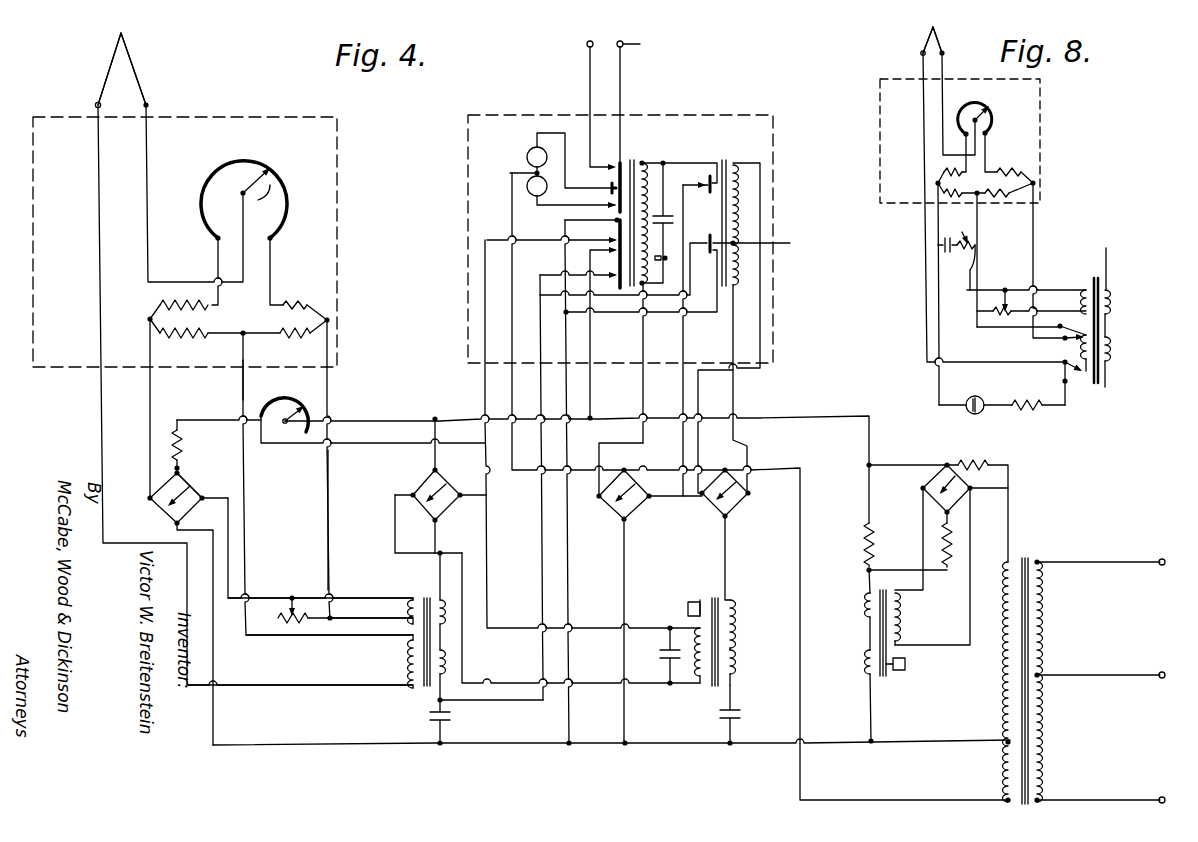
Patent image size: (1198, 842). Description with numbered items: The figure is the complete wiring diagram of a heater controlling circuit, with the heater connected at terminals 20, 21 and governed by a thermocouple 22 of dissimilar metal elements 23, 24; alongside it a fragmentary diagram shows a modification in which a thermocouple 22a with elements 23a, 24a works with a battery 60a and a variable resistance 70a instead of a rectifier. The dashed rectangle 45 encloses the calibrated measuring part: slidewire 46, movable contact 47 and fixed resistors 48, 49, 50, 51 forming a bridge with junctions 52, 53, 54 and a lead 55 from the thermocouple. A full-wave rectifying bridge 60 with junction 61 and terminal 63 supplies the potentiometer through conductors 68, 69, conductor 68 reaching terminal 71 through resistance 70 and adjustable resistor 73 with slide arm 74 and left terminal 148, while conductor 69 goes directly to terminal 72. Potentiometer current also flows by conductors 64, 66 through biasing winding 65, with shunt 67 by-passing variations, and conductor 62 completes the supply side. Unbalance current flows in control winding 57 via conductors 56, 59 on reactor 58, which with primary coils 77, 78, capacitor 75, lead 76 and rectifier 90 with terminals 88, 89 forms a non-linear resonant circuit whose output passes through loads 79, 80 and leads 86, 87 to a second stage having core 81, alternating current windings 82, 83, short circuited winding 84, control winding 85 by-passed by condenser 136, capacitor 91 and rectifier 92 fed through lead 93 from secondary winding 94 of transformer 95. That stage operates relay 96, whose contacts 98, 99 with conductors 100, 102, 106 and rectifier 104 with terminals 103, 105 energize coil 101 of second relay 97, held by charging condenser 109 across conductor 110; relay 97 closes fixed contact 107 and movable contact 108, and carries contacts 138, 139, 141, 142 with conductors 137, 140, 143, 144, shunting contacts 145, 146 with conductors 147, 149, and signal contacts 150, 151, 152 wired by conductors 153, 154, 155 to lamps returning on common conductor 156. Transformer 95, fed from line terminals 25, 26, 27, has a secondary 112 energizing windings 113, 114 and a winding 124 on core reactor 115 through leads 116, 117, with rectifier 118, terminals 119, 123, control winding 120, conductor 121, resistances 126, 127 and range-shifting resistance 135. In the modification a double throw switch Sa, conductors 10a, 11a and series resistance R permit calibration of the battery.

In FIG. 4, the heater terminal 20 is at (581, 103).
In FIG. 4, the heater terminal 21 is at (641, 162).
In FIG. 4, the thermocouple 22 is at (130, 75).
In FIG. 4, the dissimilar metal element 23 is at (103, 70).
In FIG. 4, the dissimilar metal element 24 is at (130, 50).
In FIG. 4, the line terminal 25 is at (1158, 800).
In FIG. 4, the line terminal 26 is at (1124, 676).
In FIG. 4, the line terminal 27 is at (1112, 565).
In FIG. 4, the rectangle 45 is at (337, 217).
In FIG. 4, the slidewire 46 is at (268, 157).
In FIG. 8, the slidewire 46 is at (978, 112).
In FIG. 4, the movable contact 47 is at (247, 183).
In FIG. 8, the movable contact 47 is at (968, 110).
In FIG. 4, the fixed resistor 48 is at (186, 278).
In FIG. 8, the fixed resistor 48 is at (942, 170).
In FIG. 4, the fixed resistor 49 is at (192, 338).
In FIG. 8, the fixed resistor 49 is at (936, 205).
In FIG. 4, the fixed resistor 50 is at (298, 279).
In FIG. 8, the fixed resistor 50 is at (1000, 170).
In FIG. 4, the fixed resistor 51 is at (303, 338).
In FIG. 8, the fixed resistor 51 is at (1012, 197).
In FIG. 4, the point 52 is at (323, 473).
In FIG. 8, the point 52 is at (985, 258).
In FIG. 4, the junction 53 is at (148, 318).
In FIG. 4, the point 54 is at (330, 320).
In FIG. 8, the point 54 is at (1035, 184).
In FIG. 4, the conductor 55 is at (148, 195).
In FIG. 4, the conductor 56 is at (99, 296).
In FIG. 8, the conductor 56 is at (995, 366).
In FIG. 4, the control winding 57 is at (408, 666).
In FIG. 8, the control winding 57 is at (1092, 348).
In FIG. 4, the reactor 58 is at (424, 700).
In FIG. 8, the reactor 58 is at (1100, 388).
In FIG. 4, the conductor 59 is at (296, 628).
In FIG. 8, the conductor 59 is at (984, 330).
In FIG. 4, the full-wave rectifying bridge 60 is at (194, 485).
In FIG. 4, the rectifier 61 is at (148, 495).
In FIG. 4, the conductor 62 is at (148, 425).
In FIG. 8, the conductor 62 is at (936, 235).
In FIG. 4, the rectifier terminal 63 is at (205, 497).
In FIG. 4, the conductor 64 is at (232, 542).
In FIG. 8, the conductor 64 is at (967, 290).
In FIG. 4, the biasing winding 65 is at (410, 598).
In FIG. 8, the biasing winding 65 is at (1082, 300).
In FIG. 4, the conductor 66 is at (332, 502).
In FIG. 8, the conductor 66 is at (1035, 222).
In FIG. 4, the shunt 67 is at (304, 600).
In FIG. 8, the shunt 67 is at (991, 315).
In FIG. 4, the conductor 68 is at (217, 418).
In FIG. 4, the conductor 69 is at (836, 740).
In FIG. 4, the resistance 70 is at (181, 440).
In FIG. 4, the terminal 71 is at (180, 470).
In FIG. 4, the terminal 72 is at (176, 523).
In FIG. 4, the adjustable resistor 73 is at (373, 410).
In FIG. 4, the slide arm 74 is at (320, 410).
In FIG. 4, the capacitor 75 is at (452, 716).
In FIG. 4, the lead 76 is at (455, 683).
In FIG. 4, the primary coil 77 is at (446, 656).
In FIG. 8, the primary coil 77 is at (1110, 362).
In FIG. 4, the primary coil 78 is at (446, 612).
In FIG. 8, the primary coil 78 is at (1110, 302).
In FIG. 4, the load 79 is at (444, 562).
In FIG. 4, the load 80 is at (446, 748).
In FIG. 4, the core 81 is at (722, 598).
In FIG. 4, the alternating current winding 82 is at (735, 614).
In FIG. 4, the alternating current winding 83 is at (735, 662).
In FIG. 4, the short circuited winding 84 is at (694, 600).
In FIG. 4, the direct current control winding 85 is at (698, 690).
In FIG. 4, the conductor 86 is at (592, 435).
In FIG. 4, the conductor 87 is at (573, 690).
In FIG. 4, the rectifier terminal 88 is at (463, 492).
In FIG. 4, the rectifier terminal 89 is at (416, 492).
In FIG. 4, the rectifier 90 is at (437, 486).
In FIG. 4, the capacitor 91 is at (740, 712).
In FIG. 4, the rectifier 92 is at (745, 482).
In FIG. 4, the lead 93 is at (922, 800).
In FIG. 4, the secondary winding 94 is at (1005, 775).
In FIG. 4, the transformer 95 is at (1012, 556).
In FIG. 4, the relay 96 is at (736, 165).
In FIG. 4, the second relay 97 is at (645, 160).
In FIG. 4, the contact 98 is at (723, 158).
In FIG. 4, the movable contact 99 is at (699, 192).
In FIG. 4, the conductor 100 is at (716, 160).
In FIG. 4, the coil 101 is at (679, 165).
In FIG. 4, the conductor 102 is at (643, 342).
In FIG. 4, the negative terminal 103 is at (599, 508).
In FIG. 4, the rectifier 104 is at (628, 475).
In FIG. 4, the positive terminal 105 is at (646, 508).
In FIG. 4, the conductor 106 is at (684, 345).
In FIG. 4, the fixed contact 107 is at (622, 160).
In FIG. 4, the movable contact 108 is at (608, 162).
In FIG. 4, the charging condenser 109 is at (657, 223).
In FIG. 4, the conductor 110 is at (680, 192).
In FIG. 4, the secondary 112 is at (1002, 660).
In FIG. 4, the alternating current winding 113 is at (866, 612).
In FIG. 4, the alternating current winding 114 is at (866, 666).
In FIG. 4, the core reactor 115 is at (886, 678).
In FIG. 4, the lead 116 is at (1010, 520).
In FIG. 4, the lead 117 is at (955, 740).
In FIG. 4, the rectifier 118 is at (945, 462).
In FIG. 4, the positive terminal 119 is at (1008, 490).
In FIG. 4, the control winding 120 is at (900, 630).
In FIG. 4, the conductor 121 is at (920, 542).
In FIG. 4, the negative terminal 123 is at (921, 488).
In FIG. 4, the transformer winding 124 is at (906, 664).
In FIG. 4, the resistance 126 is at (864, 542).
In FIG. 4, the resistance 127 is at (950, 568).
In FIG. 4, the resistance 135 is at (980, 462).
In FIG. 4, the condenser 136 is at (667, 640).
In FIG. 4, the conductor 137 is at (505, 706).
In FIG. 4, the contact 138 is at (578, 269).
In FIG. 4, the contact 139 is at (623, 276).
In FIG. 4, the conductor 140 is at (640, 282).
In FIG. 4, the contact 141 is at (704, 240).
In FIG. 4, the contact 142 is at (799, 238).
In FIG. 4, the conductor 143 is at (700, 318).
In FIG. 4, the conductor 144 is at (567, 384).
In FIG. 4, the contact 145 is at (592, 332).
In FIG. 4, the contact 146 is at (552, 234).
In FIG. 4, the conductor 147 is at (468, 318).
In FIG. 4, the left terminal 148 is at (264, 412).
In FIG. 4, the conductor 149 is at (591, 340).
In FIG. 4, the contact 150 is at (571, 187).
In FIG. 4, the contact 151 is at (592, 215).
In FIG. 4, the contact 152 is at (608, 186).
In FIG. 4, the conductor 153 is at (542, 278).
In FIG. 4, the conductor 154 is at (563, 222).
In FIG. 4, the conductor 155 is at (562, 135).
In FIG. 4, the common conductor 156 is at (507, 172).
In FIG. 8, the thermocouple 22a is at (928, 50).
In FIG. 8, the dissimilar metal element 23a is at (920, 40).
In FIG. 8, the dissimilar metal element 24a is at (940, 42).
In FIG. 8, the battery 60a is at (948, 240).
In FIG. 8, the variable resistance 70a is at (976, 244).
In FIG. 8, the conductor 10a is at (1068, 400).
In FIG. 8, the conductor 11a is at (936, 405).
In FIG. 8, the double throw switch Sa is at (1066, 360).
In FIG. 8, the series resistance R is at (1038, 414).